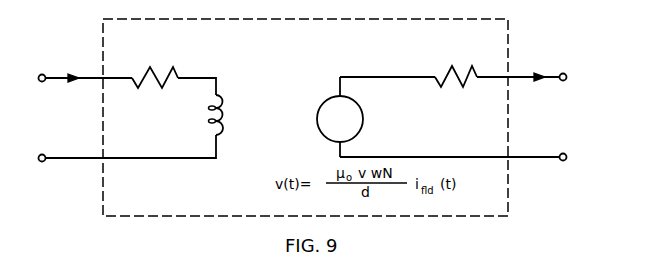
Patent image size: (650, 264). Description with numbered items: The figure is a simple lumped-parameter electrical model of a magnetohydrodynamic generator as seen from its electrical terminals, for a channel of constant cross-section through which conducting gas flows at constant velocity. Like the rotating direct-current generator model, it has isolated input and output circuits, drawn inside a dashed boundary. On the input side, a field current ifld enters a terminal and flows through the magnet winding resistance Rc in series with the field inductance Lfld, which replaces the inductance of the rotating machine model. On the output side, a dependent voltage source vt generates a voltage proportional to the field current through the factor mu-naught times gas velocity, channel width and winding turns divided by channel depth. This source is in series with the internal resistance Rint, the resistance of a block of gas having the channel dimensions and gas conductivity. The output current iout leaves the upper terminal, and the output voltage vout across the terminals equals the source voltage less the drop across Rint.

The field current ifld is at (45, 56).
The magnet winding resistance Rc is at (155, 61).
The field inductance Lfld is at (196, 115).
The dependent voltage source v(t) vt is at (322, 92).
The internal resistance Rint is at (463, 62).
The output current iout is at (569, 50).
The output voltage vout is at (559, 92).